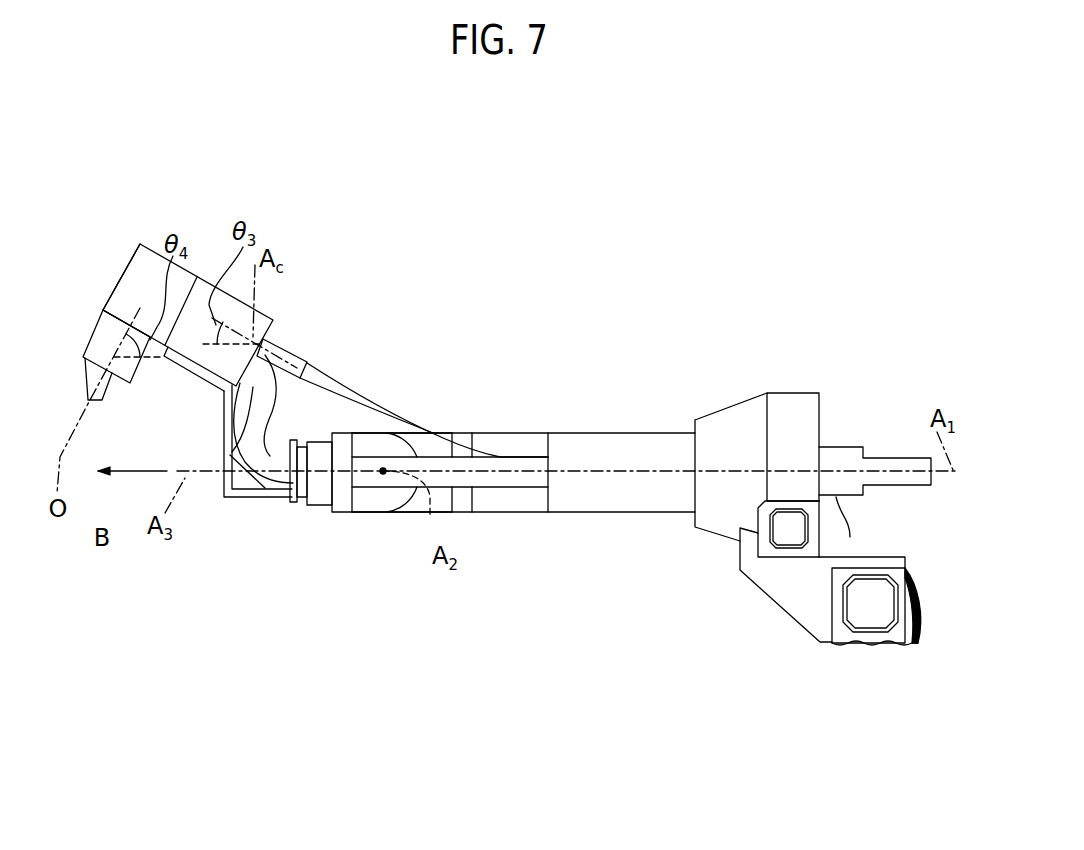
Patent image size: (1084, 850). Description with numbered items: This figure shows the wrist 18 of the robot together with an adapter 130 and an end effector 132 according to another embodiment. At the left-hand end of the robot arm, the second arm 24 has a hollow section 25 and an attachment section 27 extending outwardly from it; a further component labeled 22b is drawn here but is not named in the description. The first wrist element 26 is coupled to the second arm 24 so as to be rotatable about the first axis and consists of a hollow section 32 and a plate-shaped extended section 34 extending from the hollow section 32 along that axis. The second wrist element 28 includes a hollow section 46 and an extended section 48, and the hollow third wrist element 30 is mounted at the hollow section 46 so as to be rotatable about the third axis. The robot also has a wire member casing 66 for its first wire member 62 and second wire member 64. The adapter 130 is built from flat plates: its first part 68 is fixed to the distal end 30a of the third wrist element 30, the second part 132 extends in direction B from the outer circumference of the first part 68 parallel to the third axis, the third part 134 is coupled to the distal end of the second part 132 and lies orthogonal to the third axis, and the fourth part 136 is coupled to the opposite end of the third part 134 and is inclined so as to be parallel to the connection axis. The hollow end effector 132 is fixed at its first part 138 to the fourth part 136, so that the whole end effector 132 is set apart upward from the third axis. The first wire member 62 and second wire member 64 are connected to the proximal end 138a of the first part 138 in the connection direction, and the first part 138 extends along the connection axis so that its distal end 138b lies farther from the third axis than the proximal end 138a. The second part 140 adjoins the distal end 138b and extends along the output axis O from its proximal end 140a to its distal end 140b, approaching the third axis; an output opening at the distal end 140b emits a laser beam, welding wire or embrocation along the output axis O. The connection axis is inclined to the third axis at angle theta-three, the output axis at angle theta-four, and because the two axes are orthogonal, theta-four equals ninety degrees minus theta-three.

The wrist 18 is at (547, 570).
The coupling 22b is at (910, 637).
The second arm 24 is at (757, 422).
The hollow section 25 is at (793, 412).
The first wrist element 26 is at (523, 475).
The attachment section 27 is at (797, 609).
The second wrist element 28 is at (388, 542).
The third wrist element 30 is at (327, 447).
The distal end 30a is at (292, 474).
The hollow section 32 is at (598, 503).
The extended section 34 is at (489, 514).
The hollow section 46 is at (340, 514).
The extended section 48 is at (376, 514).
The first wire member 62 is at (257, 446).
The second wire member 64 is at (397, 412).
The wire member casing 66 is at (887, 427).
The first part 68 is at (293, 503).
The adapter 130 is at (226, 506).
The end effector 132 is at (203, 361).
The third part 134 is at (222, 406).
The fourth part 136 is at (193, 370).
The first part 138 is at (205, 290).
The proximal end 138a is at (277, 328).
The distal end 138b is at (131, 262).
The second part 140 is at (100, 340).
The proximal end 140a is at (112, 306).
The distal end 140b is at (83, 400).